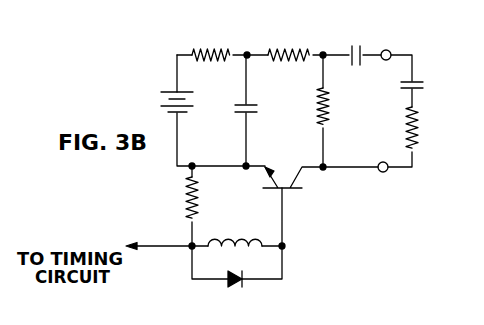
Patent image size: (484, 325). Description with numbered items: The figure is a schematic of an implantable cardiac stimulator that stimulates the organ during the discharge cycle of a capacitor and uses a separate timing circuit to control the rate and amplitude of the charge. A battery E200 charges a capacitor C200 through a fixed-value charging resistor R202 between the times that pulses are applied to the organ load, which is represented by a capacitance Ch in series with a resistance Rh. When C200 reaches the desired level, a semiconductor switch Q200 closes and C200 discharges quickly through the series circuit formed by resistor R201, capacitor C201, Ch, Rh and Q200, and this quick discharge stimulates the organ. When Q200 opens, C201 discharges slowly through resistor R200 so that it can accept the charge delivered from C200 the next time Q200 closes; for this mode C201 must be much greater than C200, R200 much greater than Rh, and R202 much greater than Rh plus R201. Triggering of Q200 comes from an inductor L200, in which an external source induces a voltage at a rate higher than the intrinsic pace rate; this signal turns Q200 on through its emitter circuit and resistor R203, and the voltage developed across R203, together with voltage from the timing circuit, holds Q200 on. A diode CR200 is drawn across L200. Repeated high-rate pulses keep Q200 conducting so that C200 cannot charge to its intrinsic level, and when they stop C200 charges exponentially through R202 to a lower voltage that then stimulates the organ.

The charging resistor R202 is at (178, 49).
The series discharge resistor R201 is at (317, 51).
The coupling capacitor C201 is at (388, 51).
The stimulating capacitor C200 is at (273, 100).
The battery E200 is at (167, 103).
The discharge resistor R200 is at (353, 106).
The organ load capacitance Ch is at (423, 87).
The organ load resistance Rh is at (414, 133).
The semiconductor switch Q200 is at (285, 181).
The emitter resistor R203 is at (191, 212).
The inductor L200 is at (198, 238).
The diode CR200 is at (236, 285).